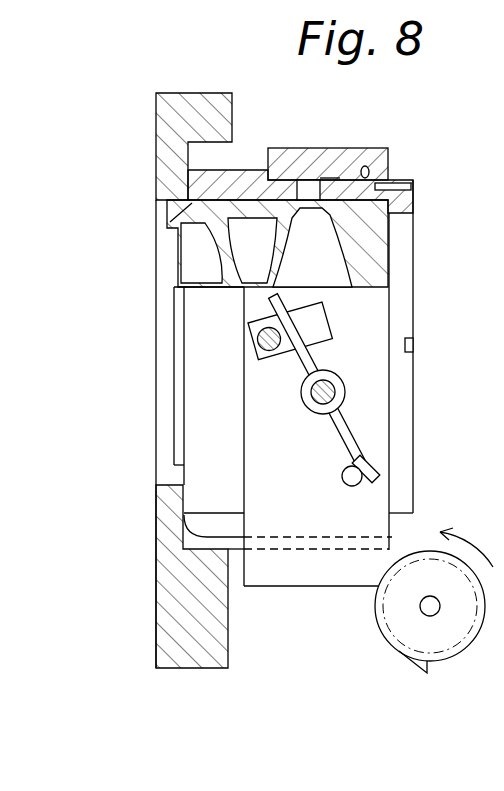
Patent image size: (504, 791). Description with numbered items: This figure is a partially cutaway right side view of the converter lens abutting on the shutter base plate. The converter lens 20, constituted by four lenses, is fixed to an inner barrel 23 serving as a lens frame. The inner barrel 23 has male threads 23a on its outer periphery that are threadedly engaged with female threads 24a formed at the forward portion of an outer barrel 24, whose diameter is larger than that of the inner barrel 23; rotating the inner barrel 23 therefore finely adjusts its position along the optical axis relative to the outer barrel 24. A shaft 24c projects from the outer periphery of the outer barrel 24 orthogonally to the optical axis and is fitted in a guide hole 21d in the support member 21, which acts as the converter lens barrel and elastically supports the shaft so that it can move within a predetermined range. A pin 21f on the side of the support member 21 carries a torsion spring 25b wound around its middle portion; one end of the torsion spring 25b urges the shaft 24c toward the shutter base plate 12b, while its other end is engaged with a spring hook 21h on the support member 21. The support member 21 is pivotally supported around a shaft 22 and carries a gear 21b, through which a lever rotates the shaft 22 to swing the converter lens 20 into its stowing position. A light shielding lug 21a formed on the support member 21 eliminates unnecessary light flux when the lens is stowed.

The shutter base plate 12b is at (170, 602).
The converter lens 20 is at (360, 224).
The support member 21 is at (307, 603).
The light shielding lug 21a is at (420, 666).
The gear 21b is at (390, 634).
The guide hole 21d is at (316, 324).
The pin 21f is at (333, 397).
The spring hook 21h is at (349, 486).
The shaft 22 is at (420, 606).
The inner barrel 23 is at (392, 185).
The male threads 23a is at (338, 173).
The outer barrel 24 is at (347, 155).
The female threads 24a is at (368, 170).
The shaft 24c is at (270, 350).
The torsion spring 25b is at (338, 441).